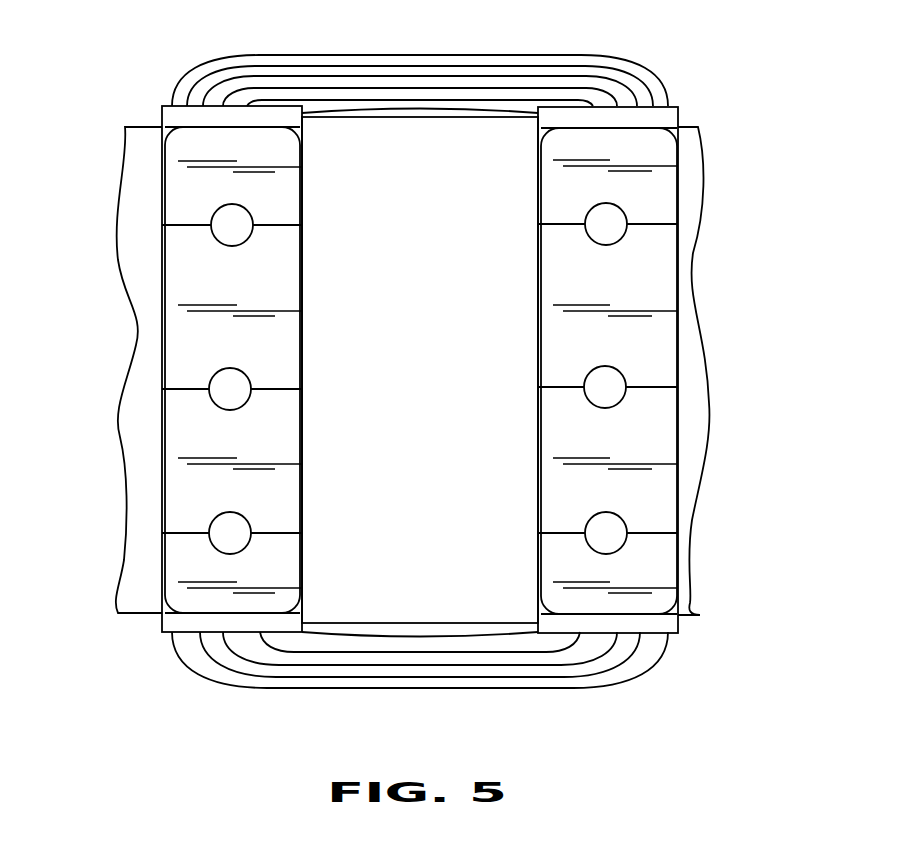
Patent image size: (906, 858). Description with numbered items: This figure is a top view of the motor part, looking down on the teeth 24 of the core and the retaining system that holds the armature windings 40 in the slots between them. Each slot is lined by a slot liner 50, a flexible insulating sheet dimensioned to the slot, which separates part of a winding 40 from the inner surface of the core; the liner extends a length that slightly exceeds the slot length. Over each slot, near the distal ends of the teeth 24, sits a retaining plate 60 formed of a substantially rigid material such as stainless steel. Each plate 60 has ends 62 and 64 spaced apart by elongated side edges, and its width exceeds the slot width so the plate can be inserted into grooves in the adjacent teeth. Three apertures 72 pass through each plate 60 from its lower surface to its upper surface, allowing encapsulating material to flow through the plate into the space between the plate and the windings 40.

The tooth 24 is at (398, 444).
The armature winding 40 is at (424, 53).
The slot liner 50 is at (173, 115).
The retaining plate 60 is at (222, 291).
The end of plate 62 is at (217, 127).
The end of plate 64 is at (198, 613).
The aperture 72 is at (212, 218).